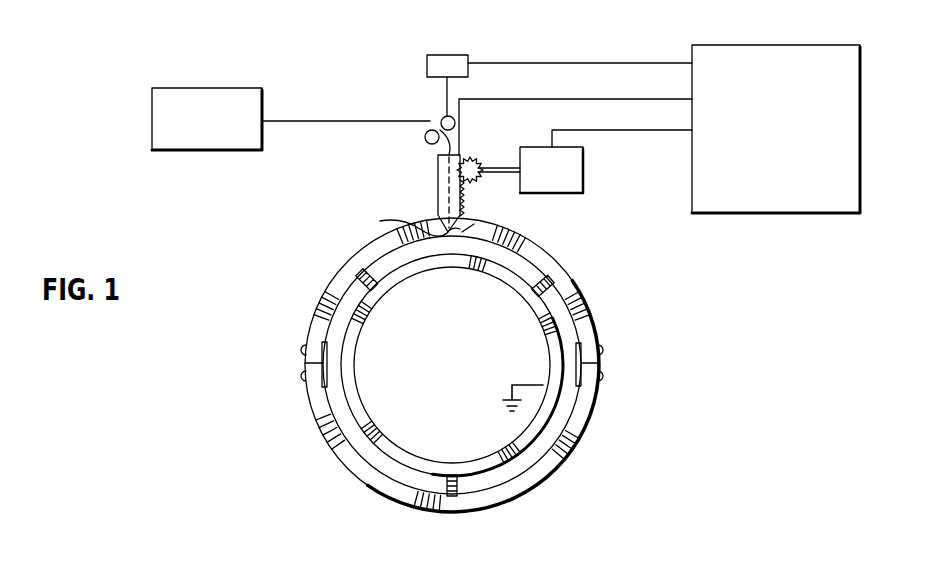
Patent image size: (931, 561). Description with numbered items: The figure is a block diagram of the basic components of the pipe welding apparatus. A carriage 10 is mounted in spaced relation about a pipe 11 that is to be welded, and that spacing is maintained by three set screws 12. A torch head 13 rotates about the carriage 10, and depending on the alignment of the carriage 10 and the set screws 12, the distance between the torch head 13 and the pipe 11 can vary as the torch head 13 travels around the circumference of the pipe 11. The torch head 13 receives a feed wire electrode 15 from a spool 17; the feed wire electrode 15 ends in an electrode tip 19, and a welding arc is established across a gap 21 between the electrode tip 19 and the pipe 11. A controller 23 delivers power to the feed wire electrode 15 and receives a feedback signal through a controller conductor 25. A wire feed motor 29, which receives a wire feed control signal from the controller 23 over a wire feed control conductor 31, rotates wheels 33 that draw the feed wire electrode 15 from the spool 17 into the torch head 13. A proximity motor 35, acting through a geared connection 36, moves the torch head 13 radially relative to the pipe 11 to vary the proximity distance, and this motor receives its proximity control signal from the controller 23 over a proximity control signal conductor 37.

The carriage 10 is at (578, 293).
The pipe 11 is at (472, 452).
The set screws 12 is at (365, 285).
The torch head 13 is at (438, 191).
The feed wire electrode 15 is at (343, 121).
The spool 17 is at (231, 88).
The electrode tip 19 is at (474, 230).
The gap 21 is at (382, 221).
The controller 23 is at (790, 213).
The controller conductor 25 is at (646, 99).
The wire feed motor 29 is at (434, 55).
The wire feed control conductor 31 is at (615, 63).
The wheels 33 is at (443, 116).
The proximity motor 35 is at (567, 193).
The geared connection 36 is at (464, 154).
The proximity control signal conductor 37 is at (598, 130).